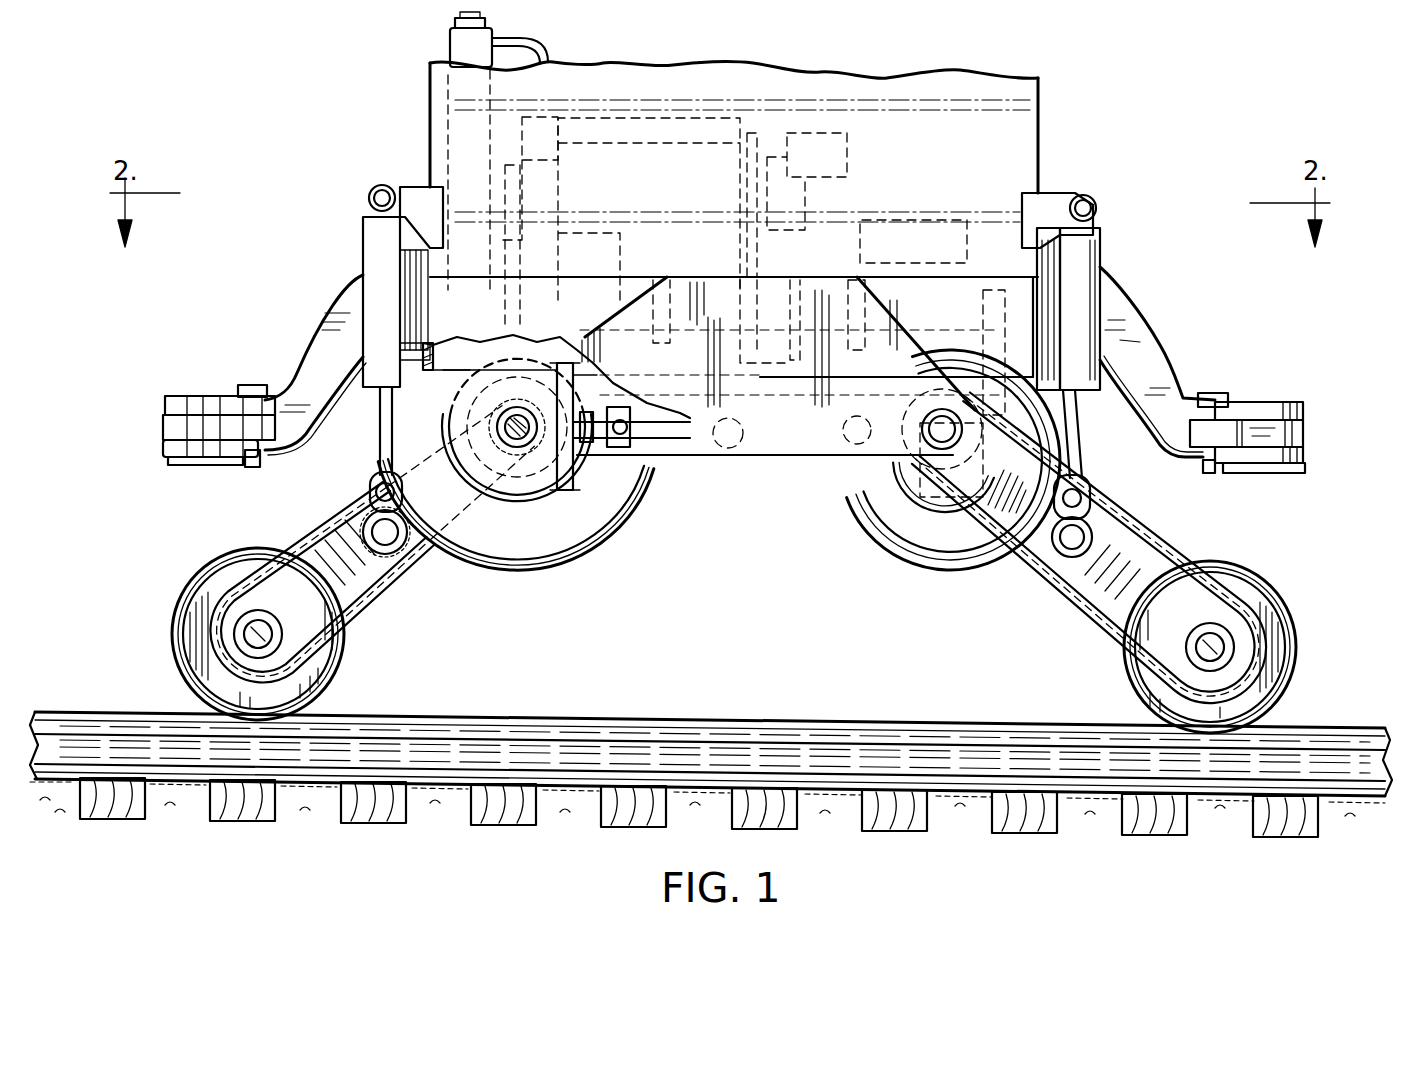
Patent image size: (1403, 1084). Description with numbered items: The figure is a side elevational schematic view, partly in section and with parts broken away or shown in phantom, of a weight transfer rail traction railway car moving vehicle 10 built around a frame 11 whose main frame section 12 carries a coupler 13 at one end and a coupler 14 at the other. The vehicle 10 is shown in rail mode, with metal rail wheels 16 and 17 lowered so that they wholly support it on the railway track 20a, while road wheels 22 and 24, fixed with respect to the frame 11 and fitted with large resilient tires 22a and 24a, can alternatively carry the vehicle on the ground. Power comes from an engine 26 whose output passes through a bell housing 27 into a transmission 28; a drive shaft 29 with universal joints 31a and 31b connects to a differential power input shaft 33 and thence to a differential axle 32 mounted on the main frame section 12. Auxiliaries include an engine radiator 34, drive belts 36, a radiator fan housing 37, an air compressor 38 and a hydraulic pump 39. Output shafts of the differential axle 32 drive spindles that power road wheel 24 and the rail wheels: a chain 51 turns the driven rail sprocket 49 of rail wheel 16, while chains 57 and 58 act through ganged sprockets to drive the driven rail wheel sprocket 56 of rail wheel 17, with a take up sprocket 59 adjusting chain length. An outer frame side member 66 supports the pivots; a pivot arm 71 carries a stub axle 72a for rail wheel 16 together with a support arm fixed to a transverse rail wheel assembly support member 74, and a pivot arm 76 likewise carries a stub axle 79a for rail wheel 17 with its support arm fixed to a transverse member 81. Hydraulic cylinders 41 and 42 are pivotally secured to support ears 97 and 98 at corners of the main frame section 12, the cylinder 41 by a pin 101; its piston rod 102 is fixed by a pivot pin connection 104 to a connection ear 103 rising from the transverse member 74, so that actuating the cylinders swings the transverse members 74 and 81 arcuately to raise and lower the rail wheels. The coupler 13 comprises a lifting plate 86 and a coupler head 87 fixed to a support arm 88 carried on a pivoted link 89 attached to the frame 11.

The traction vehicle 10 is at (1062, 136).
The frame 11 is at (1023, 300).
The main frame section 12 is at (922, 110).
The coupler assembly 13 is at (325, 312).
The coupler assembly 14 is at (1160, 350).
The rail wheel 16 is at (172, 645).
The rail wheel 17 is at (1297, 665).
The railway track 20a is at (767, 728).
The road wheel 22 is at (897, 547).
The resilient tire 22a is at (940, 553).
The road wheel 24 is at (520, 480).
The resilient tire 24a is at (567, 560).
The engine 26 is at (665, 165).
The bell housing 27 is at (860, 225).
The transmission 28 is at (1065, 433).
The drive shaft 29 is at (670, 440).
The universal joint 31a is at (845, 485).
The universal joint 31b is at (640, 503).
The differential axle 32 is at (532, 470).
The differential power input shaft 33 is at (605, 520).
The engine radiator 34 is at (455, 47).
The drive belts 36 is at (500, 182).
The radiator fan housing 37 is at (585, 200).
The air compressor 38 is at (822, 130).
The hydraulic pump 39 is at (937, 240).
The hydraulic cylinder 41 is at (363, 245).
The hydraulic cylinder 42 is at (1087, 317).
The driven rail sprocket 49 is at (353, 640).
The chain 51 is at (305, 532).
The driven rail wheel sprocket 56 is at (1210, 563).
The chain 57 is at (775, 440).
The chain 58 is at (1147, 530).
The take up sprocket 59 is at (747, 457).
The outer frame side member 66 is at (637, 307).
The pivot arm 71 is at (360, 602).
The stub axle 72a is at (310, 665).
The transverse rail wheel assembly support member 74 is at (413, 543).
The pivot arm 76 is at (1103, 617).
The stub axle 79a is at (1155, 672).
The transverse rail wheel assembly support member 81 is at (1052, 575).
The lifting plate 86 is at (193, 460).
The coupler head 87 is at (165, 425).
The support arm 88 is at (250, 385).
The link 89 is at (325, 405).
The support ear 97 is at (398, 190).
The support ear 98 is at (1067, 192).
The pin 101 is at (369, 198).
The piston rod 102 is at (380, 435).
The connection ear 103 is at (398, 502).
The pivot pin connection 104 is at (368, 490).